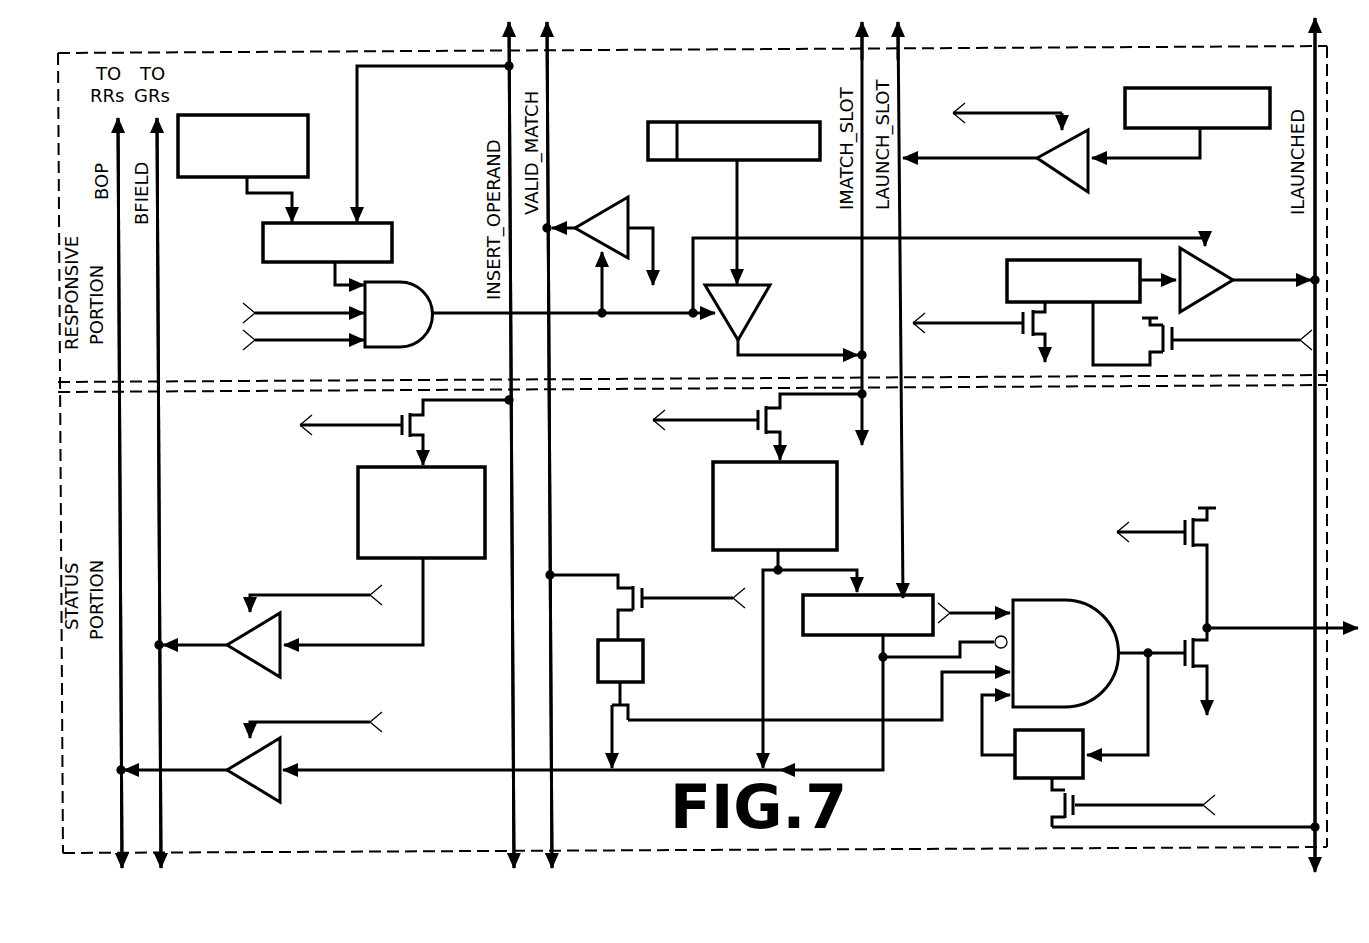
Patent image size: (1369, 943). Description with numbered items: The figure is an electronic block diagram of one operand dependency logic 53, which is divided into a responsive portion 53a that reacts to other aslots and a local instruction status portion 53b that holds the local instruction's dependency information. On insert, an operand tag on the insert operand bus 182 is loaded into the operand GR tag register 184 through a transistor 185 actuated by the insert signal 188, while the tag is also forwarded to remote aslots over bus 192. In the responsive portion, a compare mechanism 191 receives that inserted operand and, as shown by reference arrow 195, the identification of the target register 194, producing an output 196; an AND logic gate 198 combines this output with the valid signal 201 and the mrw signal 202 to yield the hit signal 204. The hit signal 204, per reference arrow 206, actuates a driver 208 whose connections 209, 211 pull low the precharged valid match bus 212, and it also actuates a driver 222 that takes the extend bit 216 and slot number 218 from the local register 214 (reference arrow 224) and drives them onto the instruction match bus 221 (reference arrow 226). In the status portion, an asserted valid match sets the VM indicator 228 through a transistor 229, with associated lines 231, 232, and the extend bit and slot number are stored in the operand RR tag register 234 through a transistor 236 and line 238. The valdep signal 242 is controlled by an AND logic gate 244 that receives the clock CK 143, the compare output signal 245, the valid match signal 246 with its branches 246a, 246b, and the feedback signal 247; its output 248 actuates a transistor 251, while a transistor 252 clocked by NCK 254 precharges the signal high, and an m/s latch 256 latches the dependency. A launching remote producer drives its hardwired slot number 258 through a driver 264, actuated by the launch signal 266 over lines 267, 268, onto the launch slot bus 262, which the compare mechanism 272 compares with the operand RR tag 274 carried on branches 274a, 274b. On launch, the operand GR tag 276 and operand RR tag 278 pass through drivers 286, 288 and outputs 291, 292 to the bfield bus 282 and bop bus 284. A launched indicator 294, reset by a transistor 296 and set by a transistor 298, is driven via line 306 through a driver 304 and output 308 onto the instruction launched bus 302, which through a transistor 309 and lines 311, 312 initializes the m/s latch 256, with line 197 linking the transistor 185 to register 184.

The operand dependency logic 53 is at (395, 35).
The responsive portion 53a is at (205, 53).
The local instruction status portion 53b is at (342, 852).
The clock CK 143 is at (945, 612).
The insert operand bus 182 is at (500, 88).
The operand GR tag register 184 is at (358, 528).
The transistor 185 is at (425, 425).
The insert signal 188 is at (1175, 808).
The compare mechanism 191 is at (392, 242).
The bus 192 is at (358, 148).
The target register 194 is at (268, 116).
The reference arrow 195 is at (258, 195).
The compare output 196 is at (330, 278).
The transistor output line 197 is at (420, 438).
The AND logic gate 198 is at (430, 288).
The valid signal 201 is at (258, 290).
The most recent writer signal 202 is at (270, 342).
The hit signal 204 is at (448, 314).
The reference arrow 206 is at (602, 313).
The driver 208 is at (628, 212).
The connection 209 is at (580, 222).
The connection 211 is at (653, 250).
The valid match bus 212 is at (550, 132).
The local register 214 is at (645, 123).
The extend bit 216 is at (665, 122).
The slot number 218 is at (745, 122).
The instruction match bus 221 is at (861, 68).
The driver 222 is at (775, 300).
The reference arrow 224 is at (740, 208).
The reference arrow 226 is at (818, 355).
The valid match indicator 228 is at (643, 660).
The transistor 229 is at (616, 598).
The transistor output line 231 is at (620, 626).
The valid match input line 232 is at (580, 575).
The operand RR tag register 234 is at (713, 518).
The transistor 236 is at (825, 428).
The transistor output line 238 is at (762, 433).
The valdep signal 242 is at (1220, 632).
The AND logic gate 244 is at (1048, 600).
The compare output signal 245 is at (888, 662).
The valid match signal 246 is at (625, 692).
The VM output branch 246a is at (612, 735).
The VM output branch 246b is at (660, 720).
The latch feedback signal 247 is at (978, 722).
The output 248 is at (1128, 652).
The transistor 251 is at (1208, 656).
The transistor 252 is at (1210, 532).
The not clock signal NCK 254 is at (1142, 534).
The m/s latch 256 is at (1015, 770).
The slot number 258 is at (1185, 88).
The launch slot bus 262 is at (900, 72).
The driver 264 is at (1055, 178).
The launch signal 266 is at (980, 113).
The slot number output line 267 is at (1145, 160).
The buffer output line 268 is at (945, 160).
The compare mechanism 272 is at (912, 575).
The operand RR tag 274 is at (800, 570).
The output line branch 274a is at (800, 595).
The output line branch 274b is at (765, 703).
The operand GR tag 276 is at (390, 647).
The operand RR tag 278 is at (462, 771).
The bfield bus 282 is at (160, 470).
The bop bus 284 is at (121, 516).
The driver 286 is at (248, 660).
The driver 288 is at (246, 778).
The buffer output line 291 is at (205, 640).
The buffer output line 292 is at (205, 765).
The launched indicator 294 is at (1007, 282).
The transistor 296 is at (1055, 335).
The transistor 298 is at (1145, 343).
The instruction launched bus 302 is at (1313, 70).
The driver 304 is at (1228, 270).
The HIT line to buffer 306 is at (1155, 272).
The buffer output line 308 is at (1255, 280).
The transistor 309 is at (1048, 806).
The transistor output line 311 is at (1283, 827).
The M/S output line 312 is at (1050, 790).